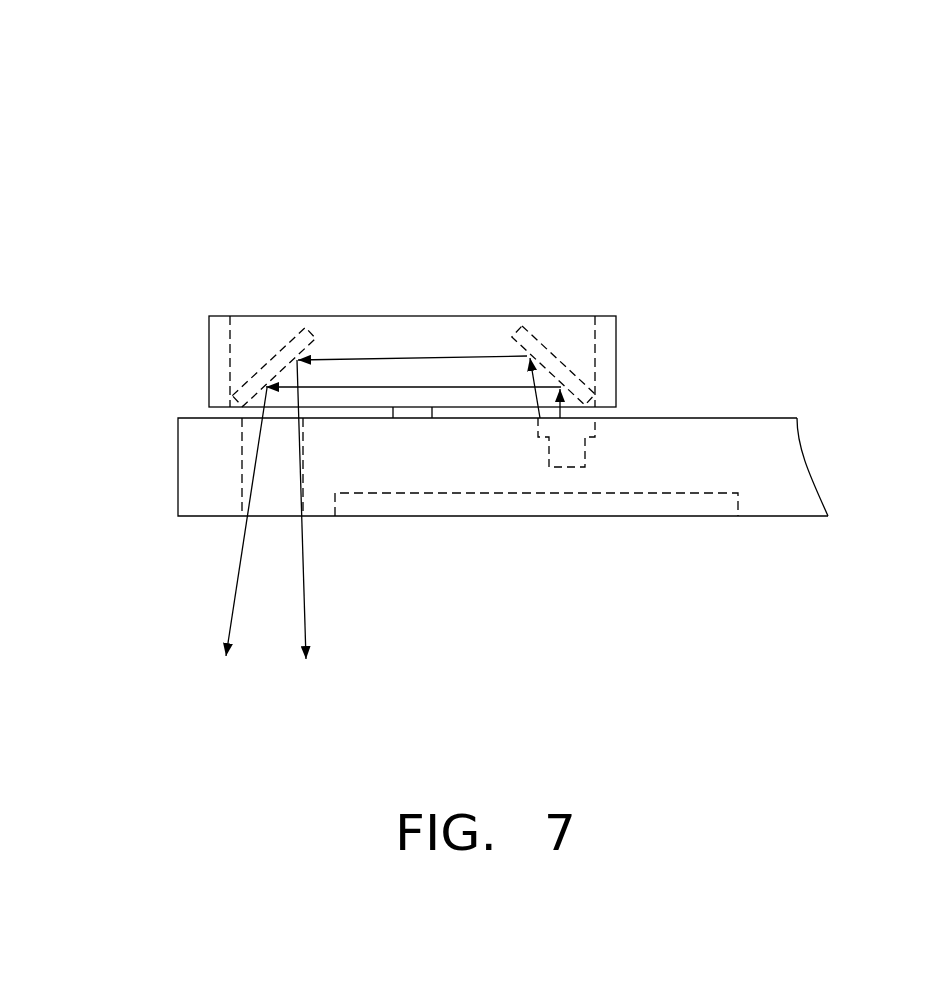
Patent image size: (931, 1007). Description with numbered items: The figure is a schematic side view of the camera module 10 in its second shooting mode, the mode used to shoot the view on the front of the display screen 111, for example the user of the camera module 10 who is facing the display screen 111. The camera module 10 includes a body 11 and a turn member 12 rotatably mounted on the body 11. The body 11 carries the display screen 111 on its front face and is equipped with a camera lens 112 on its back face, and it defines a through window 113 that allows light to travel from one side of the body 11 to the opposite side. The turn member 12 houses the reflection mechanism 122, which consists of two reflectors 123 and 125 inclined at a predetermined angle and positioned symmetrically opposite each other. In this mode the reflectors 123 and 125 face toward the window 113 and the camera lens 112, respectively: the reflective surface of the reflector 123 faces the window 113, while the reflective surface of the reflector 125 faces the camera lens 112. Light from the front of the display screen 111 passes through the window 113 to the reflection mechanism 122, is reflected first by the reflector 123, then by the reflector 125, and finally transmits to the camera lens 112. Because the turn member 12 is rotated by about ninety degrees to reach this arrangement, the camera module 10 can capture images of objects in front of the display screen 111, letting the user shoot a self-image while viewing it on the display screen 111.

The camera module 10 is at (507, 62).
The body 11 is at (161, 500).
The turn member 12 is at (182, 372).
The display screen 111 is at (470, 503).
The camera lens 112 is at (563, 455).
The window 113 is at (280, 493).
The reflection mechanism 122 is at (547, 228).
The reflector 123 is at (298, 343).
The reflector 125 is at (517, 333).